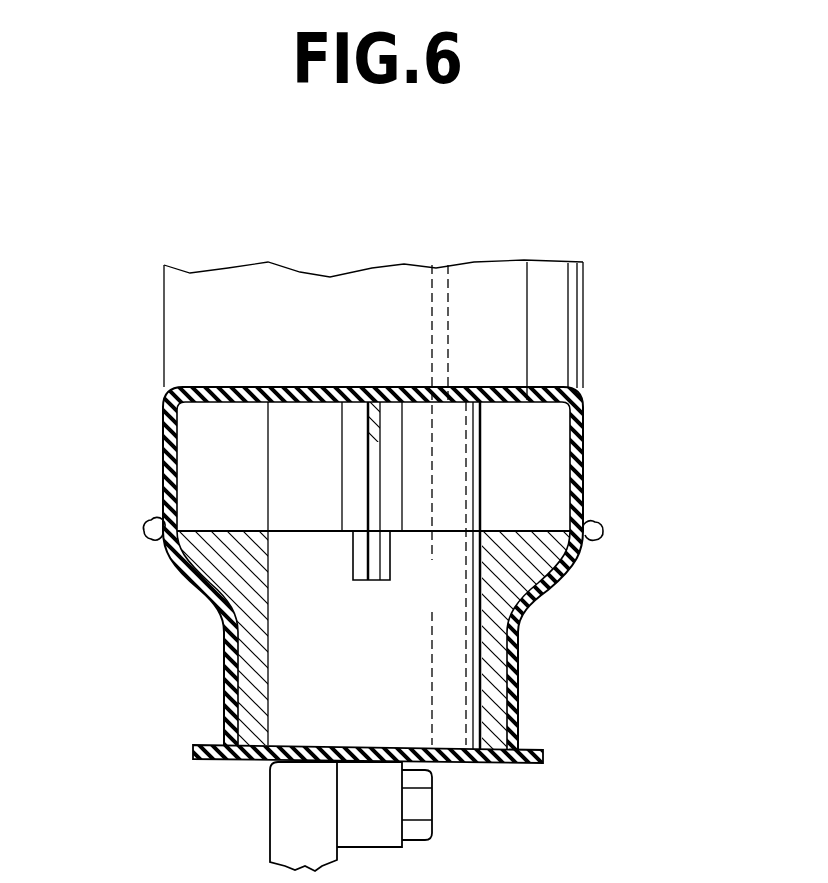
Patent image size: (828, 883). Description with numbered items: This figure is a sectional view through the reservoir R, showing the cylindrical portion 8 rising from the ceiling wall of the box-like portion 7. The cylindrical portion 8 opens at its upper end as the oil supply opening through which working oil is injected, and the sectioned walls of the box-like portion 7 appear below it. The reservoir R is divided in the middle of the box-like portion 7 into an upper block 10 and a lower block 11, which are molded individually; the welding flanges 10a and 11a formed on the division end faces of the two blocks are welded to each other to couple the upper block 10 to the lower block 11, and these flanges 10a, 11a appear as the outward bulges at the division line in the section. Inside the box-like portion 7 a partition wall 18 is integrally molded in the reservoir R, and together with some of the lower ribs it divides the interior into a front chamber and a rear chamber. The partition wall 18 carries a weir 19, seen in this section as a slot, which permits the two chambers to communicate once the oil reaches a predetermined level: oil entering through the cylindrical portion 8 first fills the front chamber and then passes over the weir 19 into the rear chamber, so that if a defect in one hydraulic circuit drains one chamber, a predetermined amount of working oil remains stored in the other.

The cylindrical portion 8 is at (513, 272).
The reservoir R is at (600, 297).
The box-like portion 7 is at (585, 447).
The upper block 10 is at (163, 448).
The flange 10a is at (148, 520).
The flange 11a is at (148, 538).
The lower block 11 is at (227, 680).
The partition wall 18 is at (452, 668).
The weir 19 is at (369, 583).